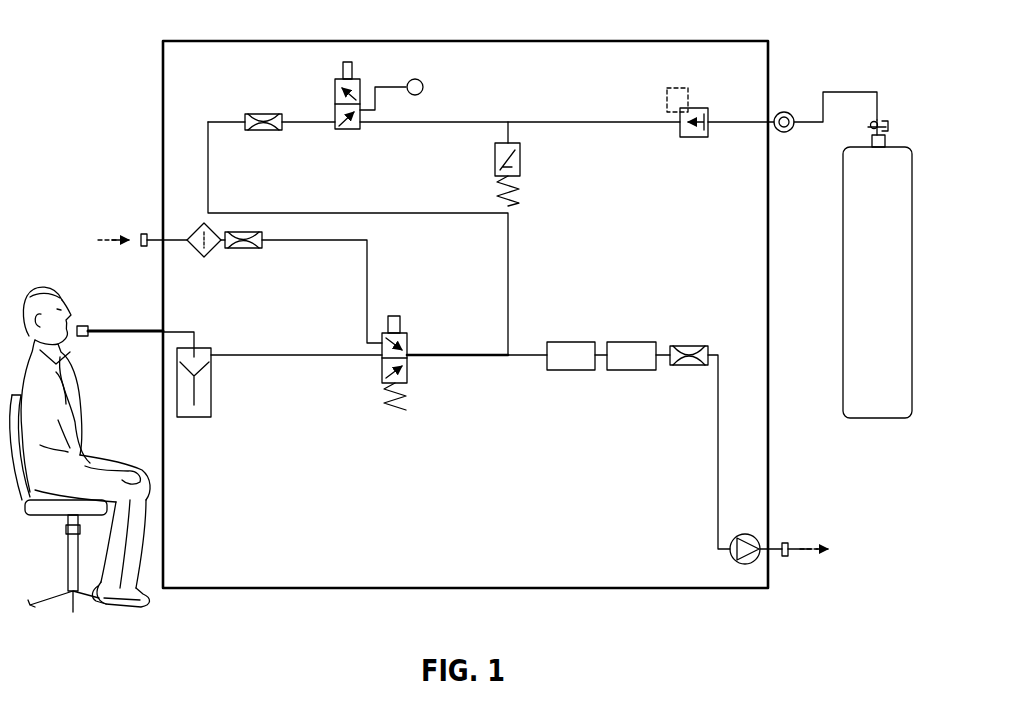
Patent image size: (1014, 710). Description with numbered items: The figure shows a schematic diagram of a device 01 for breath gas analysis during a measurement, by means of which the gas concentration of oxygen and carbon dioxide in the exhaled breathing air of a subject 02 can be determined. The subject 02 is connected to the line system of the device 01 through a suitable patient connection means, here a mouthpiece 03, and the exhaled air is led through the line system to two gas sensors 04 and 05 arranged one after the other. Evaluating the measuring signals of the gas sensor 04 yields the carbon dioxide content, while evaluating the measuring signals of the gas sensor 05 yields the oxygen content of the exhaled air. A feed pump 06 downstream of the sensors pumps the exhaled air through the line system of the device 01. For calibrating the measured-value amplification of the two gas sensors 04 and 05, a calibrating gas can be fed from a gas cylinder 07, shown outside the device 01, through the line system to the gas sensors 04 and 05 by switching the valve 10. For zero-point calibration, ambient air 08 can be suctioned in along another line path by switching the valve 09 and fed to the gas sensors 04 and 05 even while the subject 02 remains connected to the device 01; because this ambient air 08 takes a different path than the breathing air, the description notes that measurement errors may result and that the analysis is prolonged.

The device for breath gas analysis 01 is at (465, 41).
The subject 02 is at (76, 398).
The mouthpiece 03 is at (84, 325).
The gas sensor 04 is at (570, 372).
The gas sensor 05 is at (633, 372).
The feed pump 06 is at (731, 559).
The gas cylinder 07 is at (865, 420).
The ambient air 08 is at (108, 236).
The valve 09 is at (407, 340).
The valve 10 is at (345, 130).